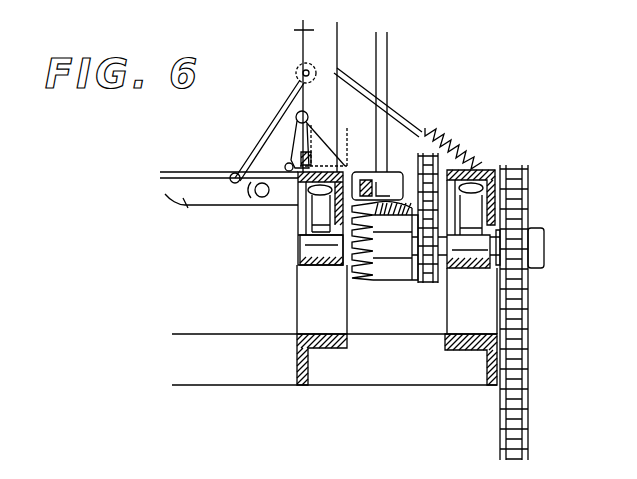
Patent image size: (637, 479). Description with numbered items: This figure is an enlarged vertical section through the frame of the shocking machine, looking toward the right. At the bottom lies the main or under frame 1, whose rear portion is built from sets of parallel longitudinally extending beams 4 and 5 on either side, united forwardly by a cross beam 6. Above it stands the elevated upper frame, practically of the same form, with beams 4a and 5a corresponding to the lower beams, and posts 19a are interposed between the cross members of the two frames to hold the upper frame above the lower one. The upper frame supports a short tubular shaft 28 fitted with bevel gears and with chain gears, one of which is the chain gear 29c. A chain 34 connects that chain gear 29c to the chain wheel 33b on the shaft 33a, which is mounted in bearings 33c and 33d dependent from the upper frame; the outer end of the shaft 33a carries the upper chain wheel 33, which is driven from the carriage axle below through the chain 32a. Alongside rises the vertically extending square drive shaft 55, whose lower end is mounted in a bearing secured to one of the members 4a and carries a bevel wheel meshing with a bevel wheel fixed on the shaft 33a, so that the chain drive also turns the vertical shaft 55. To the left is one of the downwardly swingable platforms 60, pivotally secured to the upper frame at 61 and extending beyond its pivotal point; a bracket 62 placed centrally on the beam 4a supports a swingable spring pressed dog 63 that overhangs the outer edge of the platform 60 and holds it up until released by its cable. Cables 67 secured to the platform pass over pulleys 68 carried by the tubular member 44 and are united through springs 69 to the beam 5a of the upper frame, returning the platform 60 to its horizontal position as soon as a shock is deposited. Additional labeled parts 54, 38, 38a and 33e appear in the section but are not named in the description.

The tubular member 44 is at (286, 96).
The pulley 68 is at (300, 68).
The swingable spring pressed dog 63 is at (292, 144).
The bracket 62 is at (323, 142).
The vertically extending square drive shaft 55 is at (386, 84).
The cable 67 is at (396, 134).
The chain 34 is at (437, 153).
The chain wheel 33b is at (441, 170).
The chain gear 29c is at (436, 177).
The spring 69 is at (457, 171).
The beam of upper frame 5a is at (471, 210).
The beam of upper frame 4a is at (337, 188).
The bearing 33c is at (300, 263).
The downwardly swingable platform 60 is at (183, 207).
The pivot 61 is at (258, 199).
The bearing block 54 is at (345, 164).
The bevel gear 38' 38a is at (350, 283).
The gear 38 is at (388, 226).
The bearing 33d is at (405, 257).
The short tubular shaft 28 is at (450, 198).
The upper chain wheel 33 is at (521, 226).
The sprocket teeth 33⁰ 33e is at (515, 202).
The shaft 33a is at (545, 250).
The chain 32a is at (530, 425).
The post 19a is at (307, 316).
The main or under frame 1 is at (398, 372).
The cross beam 6 is at (268, 373).
The longitudinally extending beam 4 is at (310, 352).
The longitudinally extending beam 5 is at (480, 377).